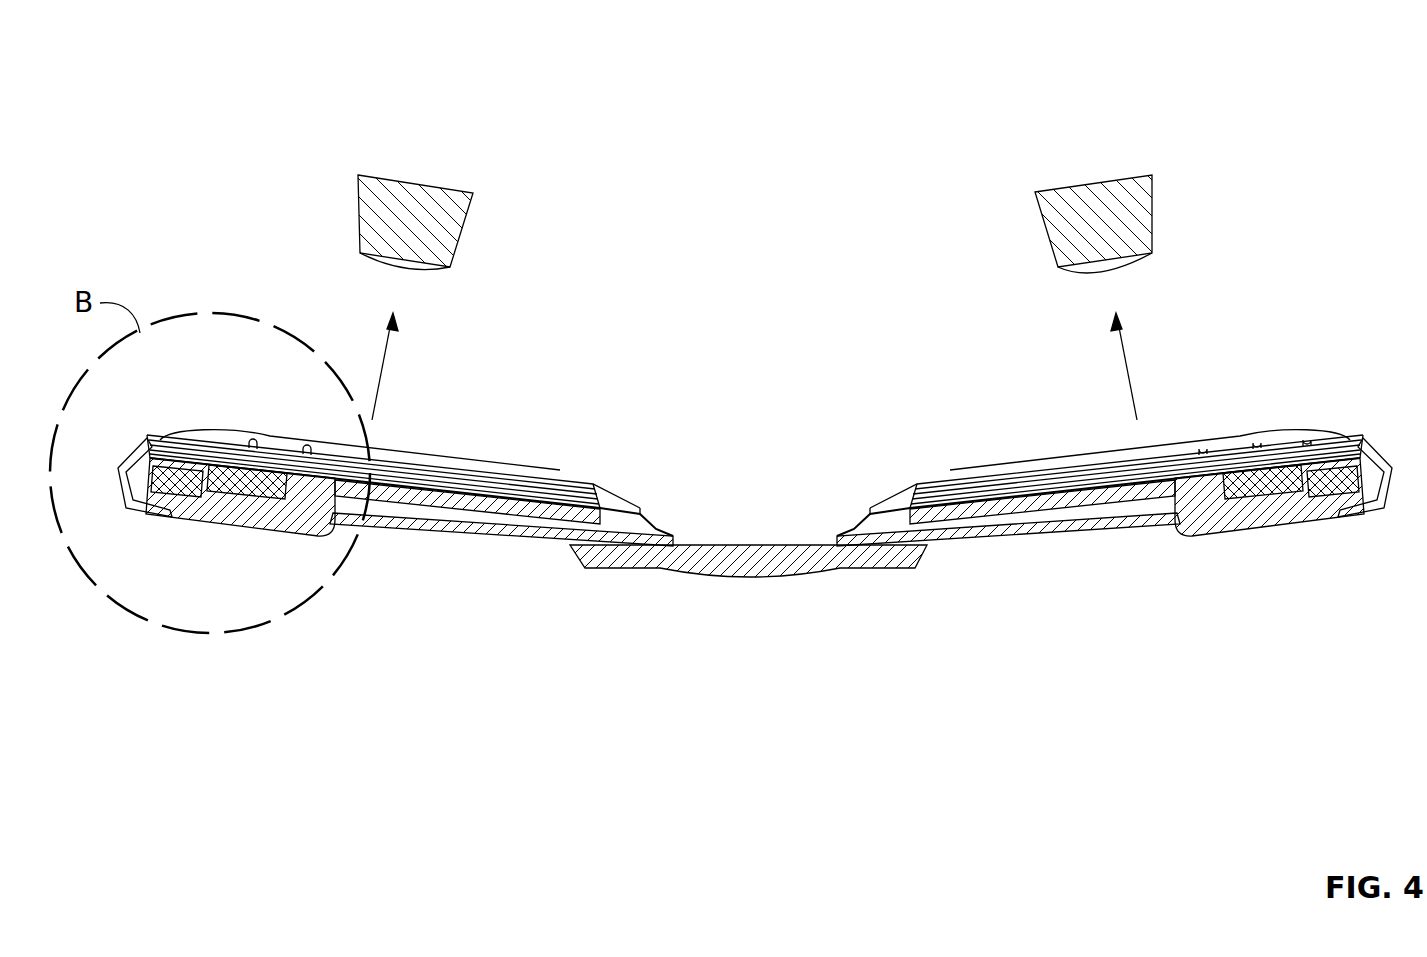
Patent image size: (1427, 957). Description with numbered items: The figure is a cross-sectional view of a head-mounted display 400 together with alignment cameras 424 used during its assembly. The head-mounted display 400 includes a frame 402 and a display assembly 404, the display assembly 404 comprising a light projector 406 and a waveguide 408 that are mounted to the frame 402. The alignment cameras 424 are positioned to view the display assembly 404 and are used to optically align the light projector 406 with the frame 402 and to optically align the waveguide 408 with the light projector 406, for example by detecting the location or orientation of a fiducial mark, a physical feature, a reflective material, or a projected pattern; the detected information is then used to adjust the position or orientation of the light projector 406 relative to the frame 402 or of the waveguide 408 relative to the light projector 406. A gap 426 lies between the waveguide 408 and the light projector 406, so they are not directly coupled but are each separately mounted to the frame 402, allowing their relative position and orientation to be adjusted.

The head-mounted display 400 is at (212, 102).
The frame 402 is at (182, 515).
The display assembly 404 is at (231, 394).
The light projector 406 is at (240, 492).
The waveguide 408 is at (257, 440).
The alignment cameras 424 is at (470, 222).
The gap 426 is at (136, 448).